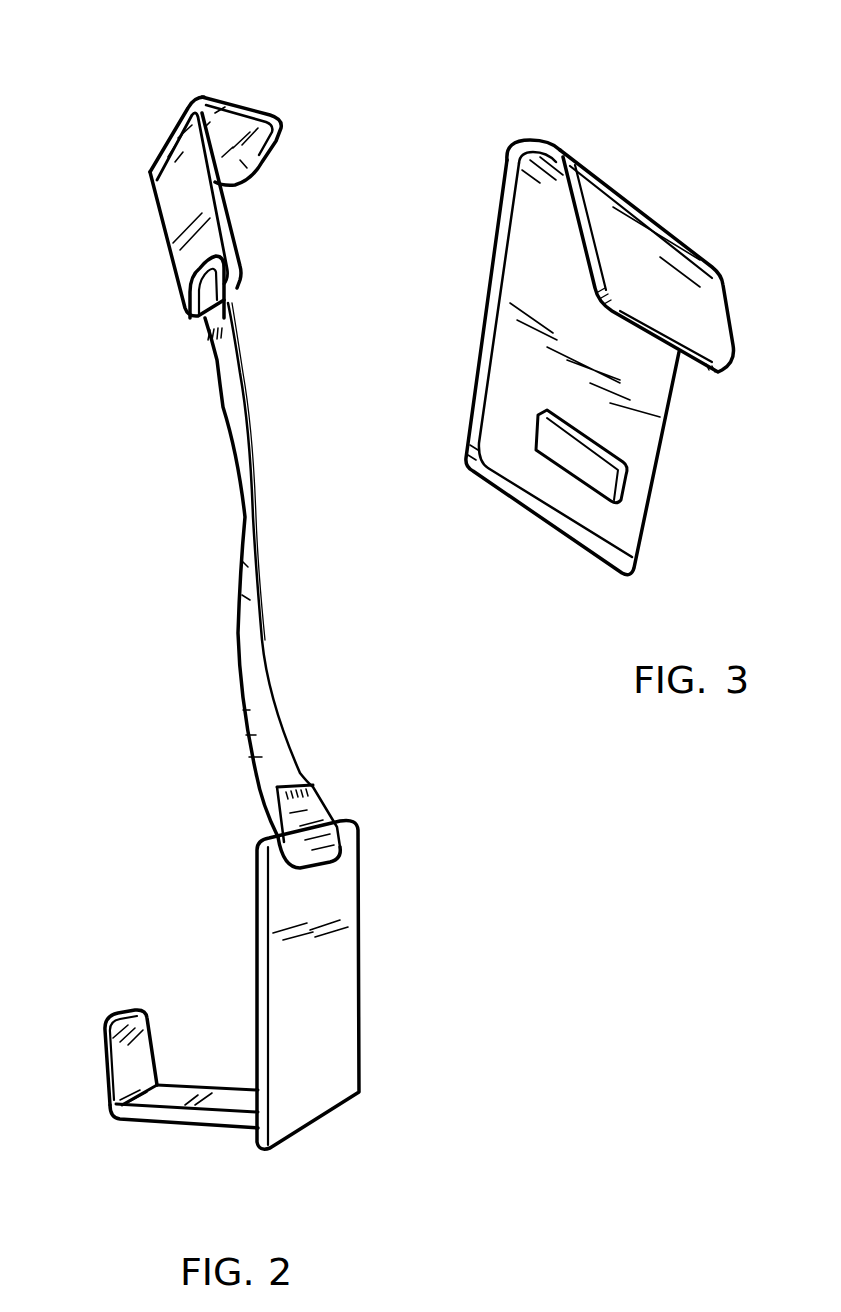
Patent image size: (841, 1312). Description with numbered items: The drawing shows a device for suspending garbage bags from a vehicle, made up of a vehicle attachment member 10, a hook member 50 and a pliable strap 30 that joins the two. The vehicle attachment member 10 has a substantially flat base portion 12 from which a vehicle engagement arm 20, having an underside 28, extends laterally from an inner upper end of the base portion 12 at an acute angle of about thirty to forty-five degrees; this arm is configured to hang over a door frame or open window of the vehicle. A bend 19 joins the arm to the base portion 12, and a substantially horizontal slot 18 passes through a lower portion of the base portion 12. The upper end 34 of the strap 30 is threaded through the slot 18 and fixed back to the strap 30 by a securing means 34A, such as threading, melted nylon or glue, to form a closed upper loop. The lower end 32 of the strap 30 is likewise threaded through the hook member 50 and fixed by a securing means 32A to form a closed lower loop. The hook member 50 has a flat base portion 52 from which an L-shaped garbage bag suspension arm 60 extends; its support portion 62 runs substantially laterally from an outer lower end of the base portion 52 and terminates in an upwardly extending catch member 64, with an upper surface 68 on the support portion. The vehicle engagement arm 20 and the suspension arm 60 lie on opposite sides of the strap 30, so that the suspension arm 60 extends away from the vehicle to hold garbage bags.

In FIG. 2, the vehicle attachment member 10 is at (199, 175).
In FIG. 3, the vehicle attachment member 10 is at (636, 305).
In FIG. 2, the base portion 12 is at (217, 237).
In FIG. 3, the base portion 12 is at (636, 367).
In FIG. 3, the slot 18 is at (600, 485).
In FIG. 3, the bend 19 is at (533, 140).
In FIG. 2, the vehicle engagement arm 20 is at (237, 100).
In FIG. 3, the vehicle engagement arm 20 is at (687, 297).
In FIG. 2, the underside 28 is at (247, 152).
In FIG. 2, the strap 30 is at (283, 562).
In FIG. 2, the lower end 32 is at (317, 823).
In FIG. 2, the securing means 32A is at (310, 788).
In FIG. 2, the upper end 34 is at (215, 317).
In FIG. 2, the securing means 34A is at (226, 333).
In FIG. 2, the hook member 50 is at (291, 1001).
In FIG. 2, the base portion 52 is at (337, 997).
In FIG. 2, the garbage bag suspension arm 60 is at (236, 1056).
In FIG. 2, the support portion 62 is at (162, 1120).
In FIG. 2, the catch member 64 is at (104, 1057).
In FIG. 2, the upper surface 68 is at (226, 1090).